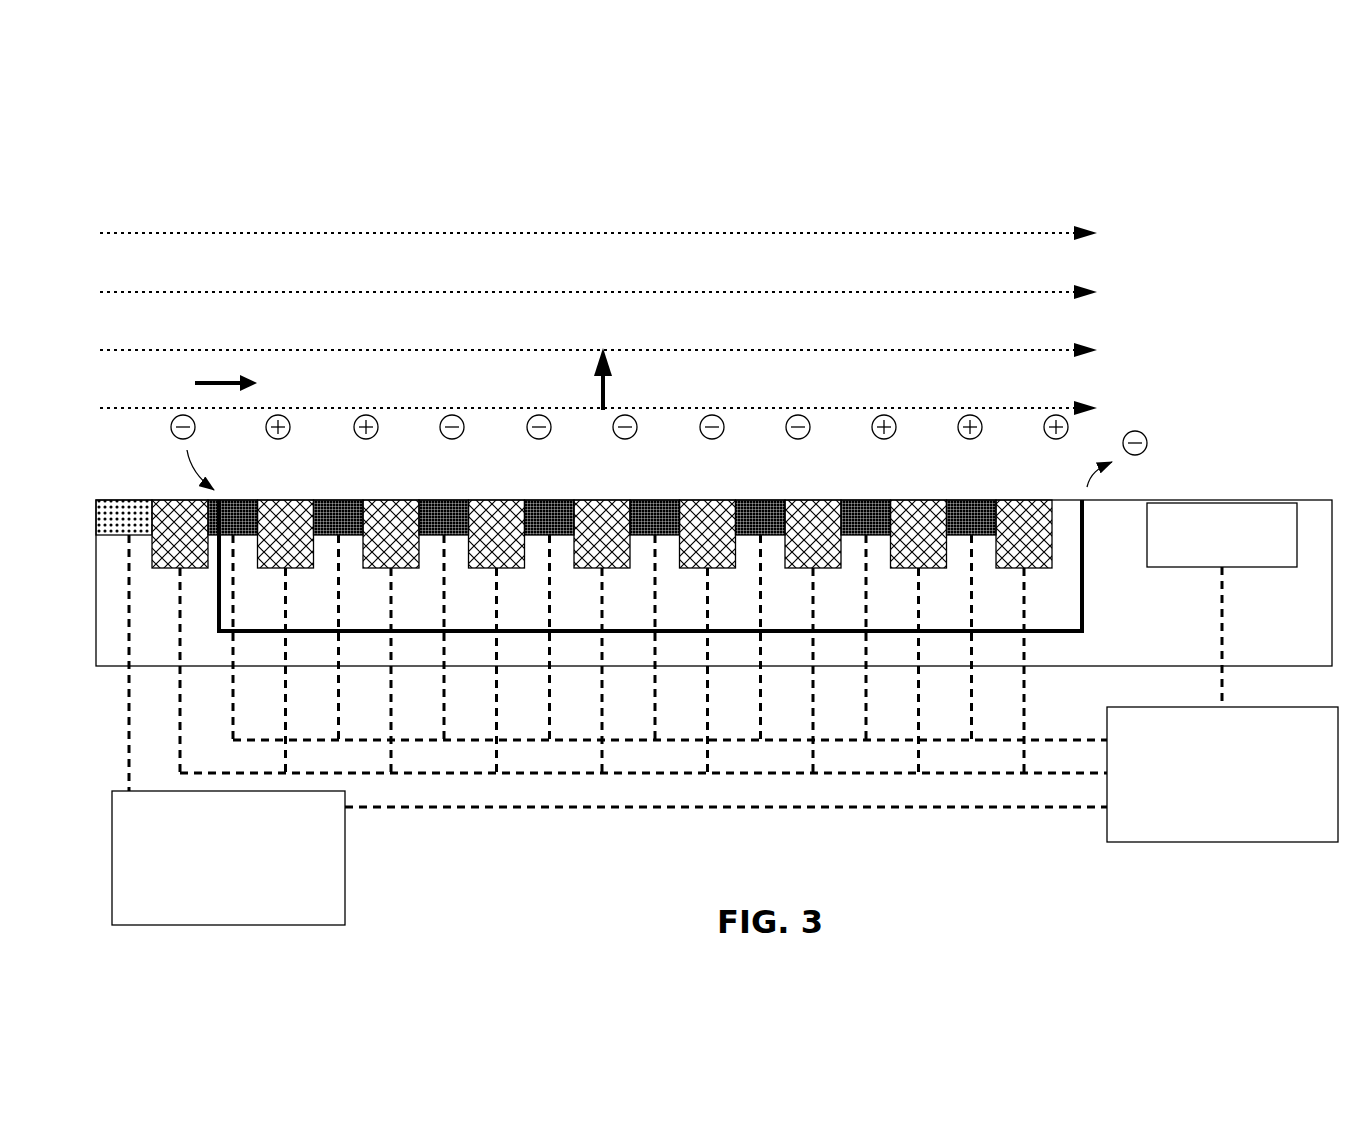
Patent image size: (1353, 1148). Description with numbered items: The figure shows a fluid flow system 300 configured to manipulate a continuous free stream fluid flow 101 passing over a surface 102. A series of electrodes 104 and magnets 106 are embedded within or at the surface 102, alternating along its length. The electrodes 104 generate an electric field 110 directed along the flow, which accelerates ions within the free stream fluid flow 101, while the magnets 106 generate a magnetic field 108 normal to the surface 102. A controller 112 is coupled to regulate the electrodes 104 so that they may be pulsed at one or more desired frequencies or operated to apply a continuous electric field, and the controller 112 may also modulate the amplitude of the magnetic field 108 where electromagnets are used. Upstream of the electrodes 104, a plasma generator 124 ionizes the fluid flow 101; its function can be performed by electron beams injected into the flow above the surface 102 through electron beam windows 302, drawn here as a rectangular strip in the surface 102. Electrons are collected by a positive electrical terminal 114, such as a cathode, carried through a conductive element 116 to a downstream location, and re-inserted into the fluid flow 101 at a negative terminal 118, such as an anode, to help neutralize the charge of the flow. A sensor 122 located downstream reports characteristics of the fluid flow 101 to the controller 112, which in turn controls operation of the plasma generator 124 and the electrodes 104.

The fluid flow system 300 is at (868, 140).
The free stream fluid flow 101 is at (415, 212).
The electric field 110 is at (198, 372).
The magnetic field 108 is at (619, 370).
The surface 102 is at (1126, 504).
The electron beam windows 302 is at (118, 500).
The electrodes 104 is at (288, 500).
The magnets 106 is at (236, 500).
The positive electrical terminal 114 is at (228, 633).
The conductive element 116 is at (597, 633).
The negative terminal 118 is at (1084, 575).
The sensor 122 is at (1222, 605).
The controller 112 is at (841, 774).
The plasma generator 124 is at (228, 858).